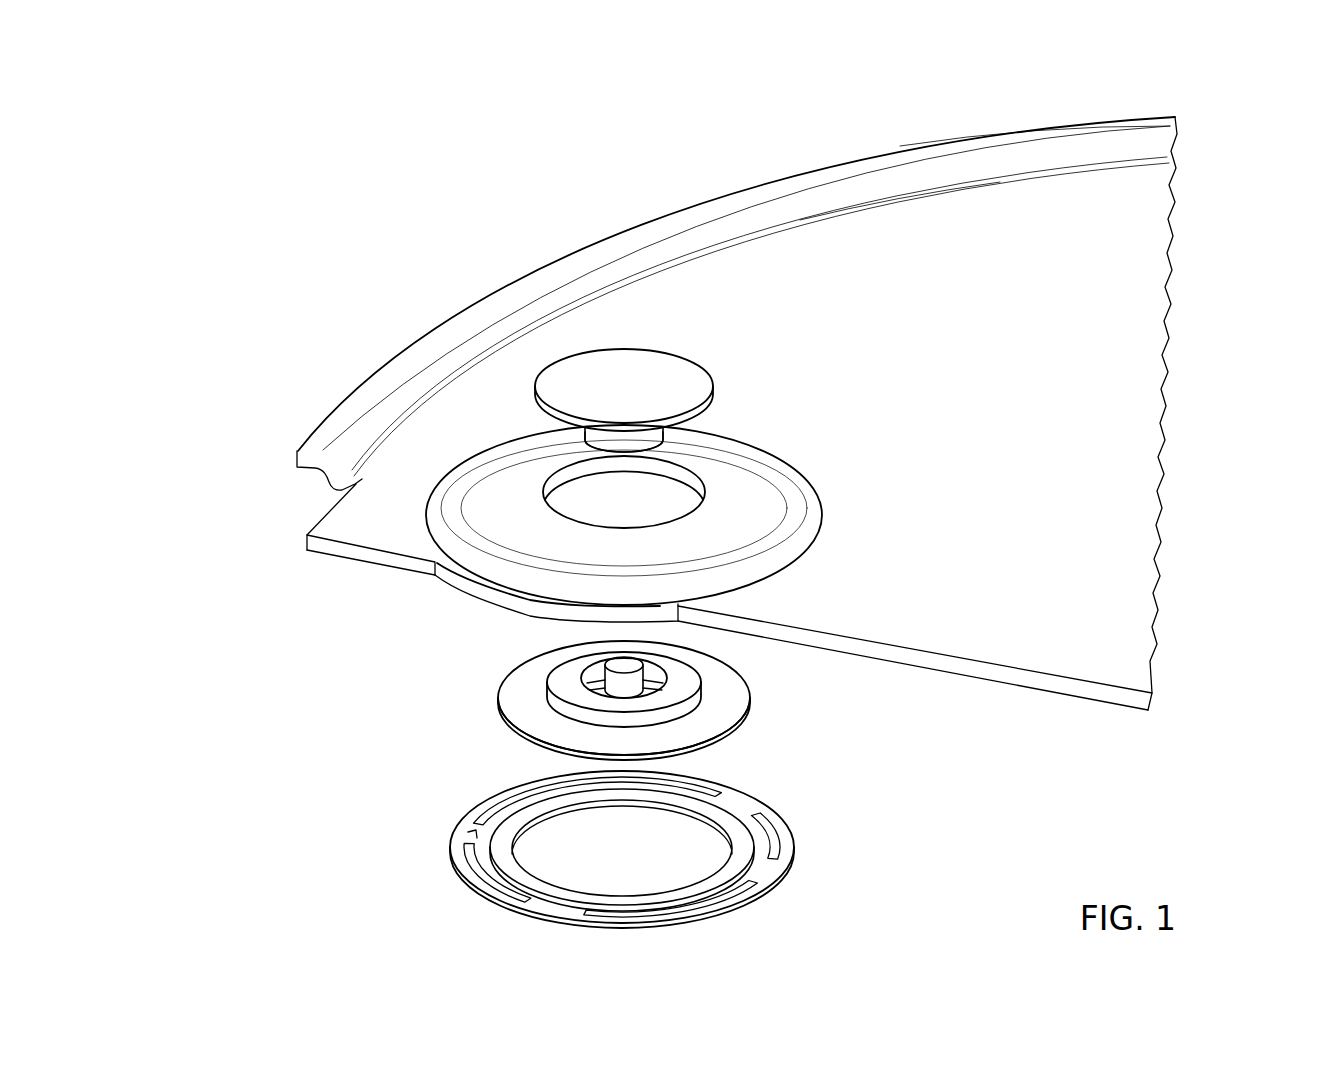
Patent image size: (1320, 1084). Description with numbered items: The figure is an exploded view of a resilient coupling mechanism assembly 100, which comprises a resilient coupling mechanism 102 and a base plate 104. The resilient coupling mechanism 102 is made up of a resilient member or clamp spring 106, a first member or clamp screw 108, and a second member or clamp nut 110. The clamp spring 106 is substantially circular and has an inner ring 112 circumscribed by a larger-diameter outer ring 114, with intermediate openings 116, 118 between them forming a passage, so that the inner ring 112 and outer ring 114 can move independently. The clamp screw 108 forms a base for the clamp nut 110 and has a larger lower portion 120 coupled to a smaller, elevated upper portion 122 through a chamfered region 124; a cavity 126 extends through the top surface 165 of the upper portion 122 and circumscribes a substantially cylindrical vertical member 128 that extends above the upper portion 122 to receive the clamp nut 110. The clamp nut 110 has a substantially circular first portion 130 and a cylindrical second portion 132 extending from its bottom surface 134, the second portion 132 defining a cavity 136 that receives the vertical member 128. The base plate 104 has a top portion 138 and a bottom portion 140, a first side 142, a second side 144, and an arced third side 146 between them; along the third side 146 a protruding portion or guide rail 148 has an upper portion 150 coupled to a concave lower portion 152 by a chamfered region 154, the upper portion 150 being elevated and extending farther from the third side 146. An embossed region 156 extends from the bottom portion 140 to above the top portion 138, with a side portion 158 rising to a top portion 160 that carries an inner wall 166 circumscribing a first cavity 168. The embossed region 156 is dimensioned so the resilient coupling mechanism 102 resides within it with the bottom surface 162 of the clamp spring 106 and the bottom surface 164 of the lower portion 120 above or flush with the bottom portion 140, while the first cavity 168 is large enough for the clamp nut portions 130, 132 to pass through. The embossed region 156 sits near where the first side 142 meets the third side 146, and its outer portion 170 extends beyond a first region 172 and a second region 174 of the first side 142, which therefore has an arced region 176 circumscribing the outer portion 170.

The resilient coupling mechanism assembly 100 is at (443, 192).
The resilient coupling mechanism 102 is at (204, 920).
The base plate 104 is at (740, 417).
The resilient member (clamp spring) 106 is at (799, 851).
The first member (clamp screw) 108 is at (752, 695).
The second member (clamp nut) 110 is at (676, 417).
The inner portion (inner ring) 112 is at (526, 876).
The outer portion (outer ring) 114 is at (726, 790).
The intermediate opening 116 is at (476, 838).
The intermediate opening 118 is at (760, 824).
The first (lower) portion of the clamp screw 120 is at (512, 708).
The second (upper) portion of the clamp screw 122 is at (558, 680).
The chamfered region 124 is at (566, 716).
The cavity 126 is at (655, 680).
The vertical member 128 is at (625, 668).
The first portion of the clamp nut 130 is at (694, 369).
The second portion of the clamp nut 132 is at (604, 442).
The bottom surface of the clamp nut first portion 134 is at (722, 393).
The cavity of the clamp nut 136 is at (670, 437).
The top portion of the base plate 138 is at (912, 206).
The bottom portion of the base plate 140 is at (393, 579).
The first side 142 is at (1022, 692).
The second side 144 is at (1168, 445).
The third side 146 is at (317, 512).
The protruding portion (guide rail) 148 is at (751, 186).
The upper portion of the guide rail 150 is at (623, 236).
The lower portion of the guide rail 152 is at (1004, 181).
The chamfered region of the guide rail 154 is at (1086, 142).
The embossed region 156 is at (820, 524).
The side portion of the embossed region 158 is at (431, 532).
The top portion of the embossed region 160 is at (498, 484).
The bottom surface of the clamp spring 162 is at (788, 904).
The bottom surface of the clamp screw lower portion 164 is at (750, 716).
The top surface of the clamp screw upper portion 165 is at (688, 686).
The inner wall 166 is at (585, 467).
The first cavity 168 is at (700, 497).
The outer portion of the embossed region 170 is at (760, 544).
The first region of the first side 172 is at (322, 546).
The second region of the first side 174 is at (1090, 700).
The arced region 176 is at (456, 581).